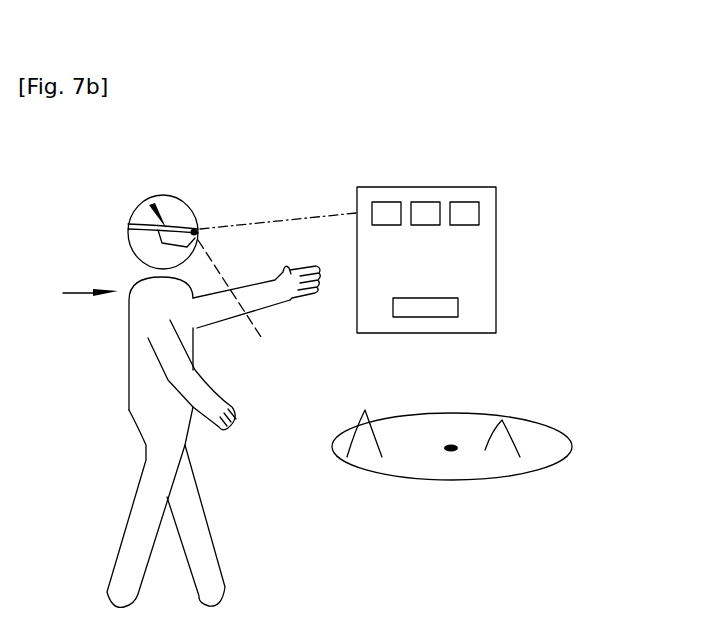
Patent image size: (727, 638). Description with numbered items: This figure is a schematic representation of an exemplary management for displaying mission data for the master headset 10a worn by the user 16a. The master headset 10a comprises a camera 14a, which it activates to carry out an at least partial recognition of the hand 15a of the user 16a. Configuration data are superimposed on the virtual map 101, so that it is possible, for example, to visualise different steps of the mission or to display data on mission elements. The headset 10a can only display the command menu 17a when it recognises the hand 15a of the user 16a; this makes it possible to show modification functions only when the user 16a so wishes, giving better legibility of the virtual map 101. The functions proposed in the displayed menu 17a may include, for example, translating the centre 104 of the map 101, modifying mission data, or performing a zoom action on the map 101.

The master headset 10a is at (152, 206).
The camera 14a is at (192, 228).
The hand 15a is at (290, 303).
The user 16a is at (63, 293).
The displayed menu 17a is at (496, 280).
The map 101 is at (407, 482).
The centre 104 is at (448, 438).